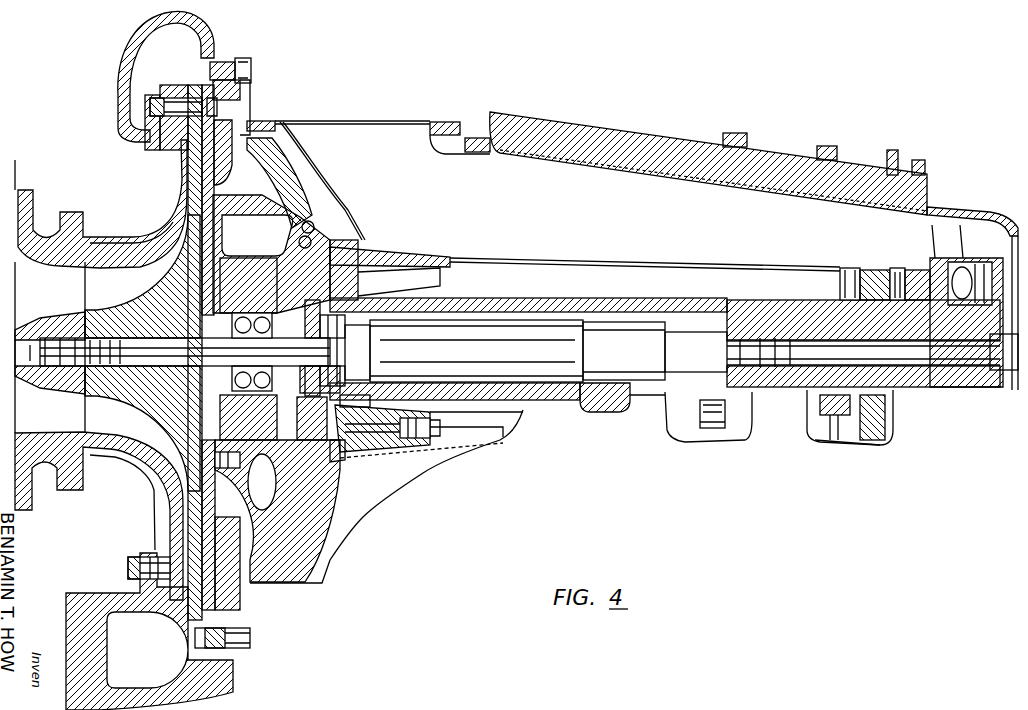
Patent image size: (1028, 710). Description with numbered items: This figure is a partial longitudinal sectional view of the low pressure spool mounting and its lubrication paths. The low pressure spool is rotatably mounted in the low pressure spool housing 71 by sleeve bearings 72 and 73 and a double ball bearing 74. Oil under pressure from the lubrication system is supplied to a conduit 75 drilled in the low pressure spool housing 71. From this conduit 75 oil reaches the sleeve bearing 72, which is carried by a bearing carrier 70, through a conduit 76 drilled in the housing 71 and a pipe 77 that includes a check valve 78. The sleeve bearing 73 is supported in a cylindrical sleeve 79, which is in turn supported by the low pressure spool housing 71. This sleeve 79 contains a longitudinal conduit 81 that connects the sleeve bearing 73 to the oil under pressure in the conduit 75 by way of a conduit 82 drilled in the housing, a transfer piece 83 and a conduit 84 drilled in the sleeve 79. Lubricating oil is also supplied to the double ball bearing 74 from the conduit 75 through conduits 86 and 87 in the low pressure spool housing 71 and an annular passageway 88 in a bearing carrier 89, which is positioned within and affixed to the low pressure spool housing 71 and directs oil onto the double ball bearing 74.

The bearing carrier 70 is at (875, 276).
The low pressure spool housing 71 is at (328, 240).
The sleeve bearing 72 is at (893, 408).
The sleeve bearing 73 is at (612, 318).
The double ball bearing 74 is at (277, 330).
The conduit 75 is at (336, 462).
The conduit 76 is at (415, 432).
The pipe 77 is at (386, 496).
The check valve 78 is at (718, 432).
The cylindrical sleeve 79 is at (540, 308).
The longitudinal conduit 81 is at (583, 384).
The conduit 82 is at (358, 404).
The transfer piece 83 is at (310, 418).
The conduit 84 is at (275, 373).
The conduit 86 is at (268, 447).
The conduit 87 is at (235, 462).
The annular passageway 88 is at (186, 438).
The bearing carrier 89 is at (251, 268).